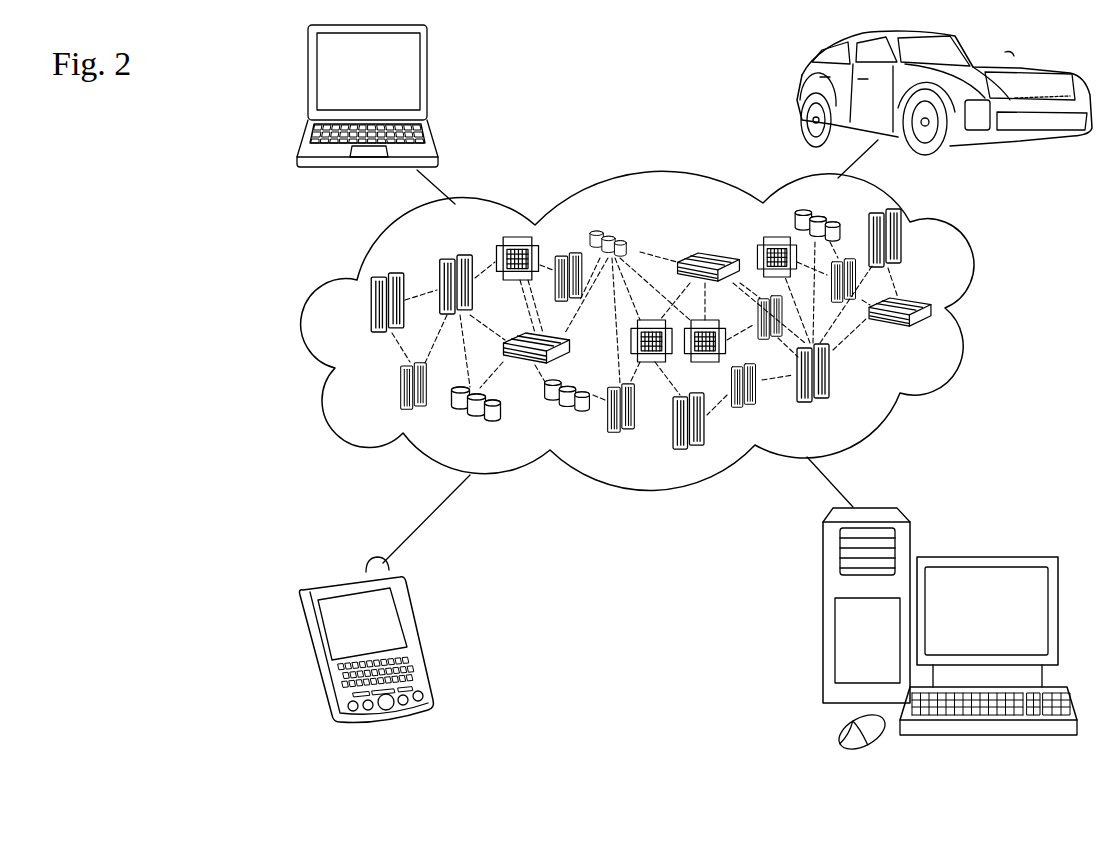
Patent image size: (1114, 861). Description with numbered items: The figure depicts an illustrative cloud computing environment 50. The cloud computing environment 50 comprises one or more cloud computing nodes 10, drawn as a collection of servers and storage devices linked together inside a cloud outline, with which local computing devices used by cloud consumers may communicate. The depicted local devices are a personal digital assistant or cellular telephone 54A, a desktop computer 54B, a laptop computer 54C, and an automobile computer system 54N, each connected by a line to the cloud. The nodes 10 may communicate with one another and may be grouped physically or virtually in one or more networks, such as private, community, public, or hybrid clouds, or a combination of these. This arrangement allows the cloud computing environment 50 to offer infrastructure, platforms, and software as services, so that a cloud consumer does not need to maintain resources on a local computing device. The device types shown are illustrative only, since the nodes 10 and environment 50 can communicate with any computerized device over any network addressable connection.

The cloud computing node 10 is at (937, 337).
The cloud computing environment 50 is at (985, 311).
The personal digital assistant or cellular telephone 54A is at (418, 637).
The desktop computer 54B is at (983, 556).
The laptop computer 54C is at (427, 80).
The automobile computer system 54N is at (800, 94).